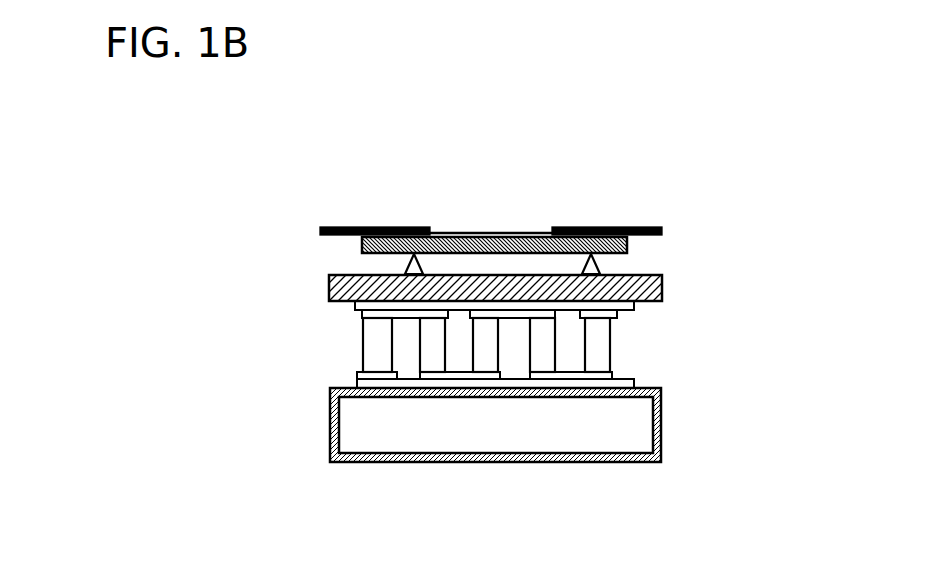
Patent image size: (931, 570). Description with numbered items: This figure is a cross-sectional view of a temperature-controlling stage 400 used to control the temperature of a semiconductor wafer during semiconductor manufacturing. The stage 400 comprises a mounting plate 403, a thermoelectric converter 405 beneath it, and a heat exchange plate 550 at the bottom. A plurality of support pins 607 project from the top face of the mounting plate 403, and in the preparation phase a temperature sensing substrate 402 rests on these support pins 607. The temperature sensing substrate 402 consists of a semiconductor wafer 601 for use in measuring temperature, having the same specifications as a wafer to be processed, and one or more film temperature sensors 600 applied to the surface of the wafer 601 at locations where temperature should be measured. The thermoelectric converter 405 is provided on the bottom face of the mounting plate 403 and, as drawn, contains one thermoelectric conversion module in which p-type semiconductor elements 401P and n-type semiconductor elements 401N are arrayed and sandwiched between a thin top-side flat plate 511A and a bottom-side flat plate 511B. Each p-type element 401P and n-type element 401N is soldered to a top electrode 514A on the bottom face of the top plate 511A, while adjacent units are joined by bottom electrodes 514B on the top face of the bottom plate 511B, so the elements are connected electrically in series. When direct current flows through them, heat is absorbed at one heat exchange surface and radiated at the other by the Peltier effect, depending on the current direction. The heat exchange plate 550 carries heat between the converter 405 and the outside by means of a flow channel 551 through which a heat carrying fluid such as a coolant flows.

The temperature sensing substrate 402 is at (637, 140).
The film temperature sensor 600 is at (400, 227).
The semiconductor wafer for use in measuring temperature 601 is at (505, 237).
The support pin 607 is at (410, 269).
The mounting plate 403 is at (637, 275).
The temperature-controlling stage 400 is at (677, 283).
The thermoelectric converter 405 is at (633, 365).
The top-side flat plate 511A is at (353, 305).
The top electrode 514A is at (363, 313).
The p-type semiconductor element 401P is at (610, 353).
The n-type semiconductor element 401N is at (537, 353).
The bottom electrode 514B is at (353, 372).
The bottom-side flat plate 511B is at (357, 383).
The heat exchange plate 550 is at (515, 462).
The flow channel 551 is at (623, 443).